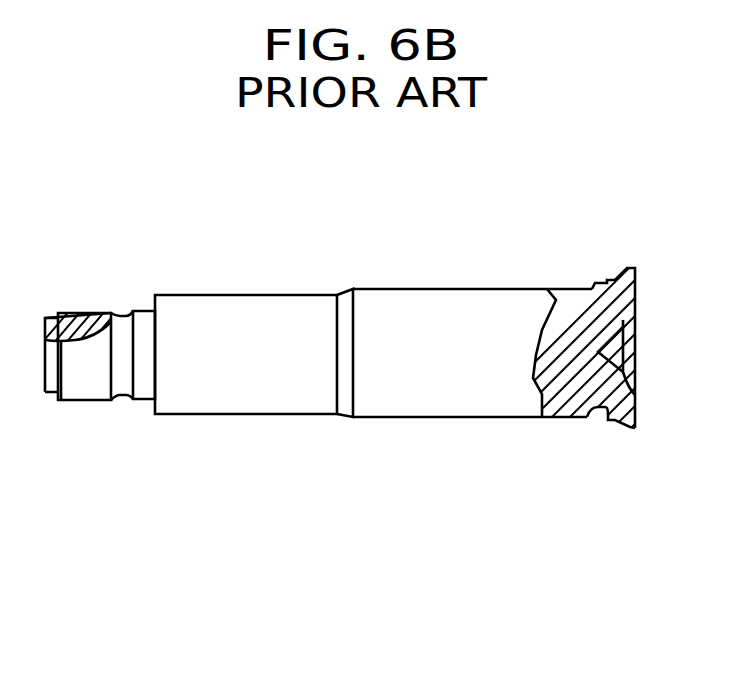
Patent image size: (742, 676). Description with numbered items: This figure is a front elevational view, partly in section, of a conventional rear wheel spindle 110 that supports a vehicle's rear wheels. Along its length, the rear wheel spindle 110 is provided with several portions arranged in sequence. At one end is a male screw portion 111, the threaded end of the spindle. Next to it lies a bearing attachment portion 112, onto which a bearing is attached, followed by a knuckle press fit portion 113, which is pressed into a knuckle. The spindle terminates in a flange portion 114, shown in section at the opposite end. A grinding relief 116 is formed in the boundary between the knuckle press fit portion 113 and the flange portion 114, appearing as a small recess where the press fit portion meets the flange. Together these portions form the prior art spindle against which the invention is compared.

The rear wheel spindle 110 is at (362, 512).
The male screw portion 111 is at (87, 380).
The bearing attachment portion 112 is at (253, 318).
The knuckle press fit portion 113 is at (393, 300).
The flange portion 114 is at (630, 427).
The grinding relief 116 is at (595, 286).